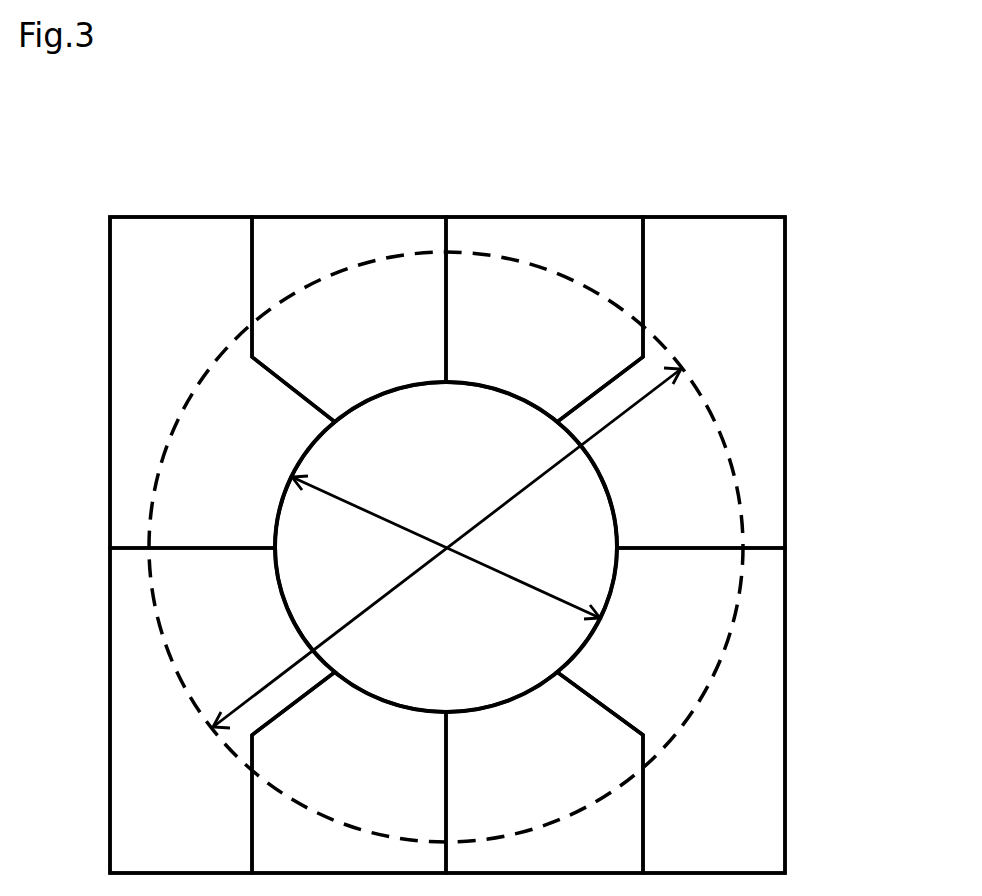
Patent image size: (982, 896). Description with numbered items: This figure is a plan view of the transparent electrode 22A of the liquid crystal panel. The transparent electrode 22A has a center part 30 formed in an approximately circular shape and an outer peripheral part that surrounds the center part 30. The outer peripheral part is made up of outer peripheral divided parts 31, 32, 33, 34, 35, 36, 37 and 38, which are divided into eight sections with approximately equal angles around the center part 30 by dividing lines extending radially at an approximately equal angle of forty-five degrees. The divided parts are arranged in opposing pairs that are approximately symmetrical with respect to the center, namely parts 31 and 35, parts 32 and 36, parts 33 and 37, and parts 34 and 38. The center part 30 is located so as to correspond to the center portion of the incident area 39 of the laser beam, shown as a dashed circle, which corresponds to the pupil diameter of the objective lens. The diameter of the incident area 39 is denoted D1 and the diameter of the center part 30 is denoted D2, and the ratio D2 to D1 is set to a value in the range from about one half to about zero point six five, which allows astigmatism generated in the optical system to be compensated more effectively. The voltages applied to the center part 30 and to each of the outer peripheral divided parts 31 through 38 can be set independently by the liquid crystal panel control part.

The transparent electrode 22A is at (760, 162).
The center part 30 is at (446, 547).
The outer peripheral divided part 31 is at (222, 382).
The outer peripheral divided part 32 is at (349, 319).
The outer peripheral divided part 33 is at (544, 319).
The outer peripheral divided part 34 is at (671, 382).
The outer peripheral divided part 35 is at (671, 710).
The outer peripheral divided part 36 is at (544, 772).
The outer peripheral divided part 37 is at (349, 772).
The outer peripheral divided part 38 is at (222, 710).
The incident area 39 is at (735, 473).
The diameter of the incident area D1 is at (392, 592).
The diameter of the center part D2 is at (523, 582).